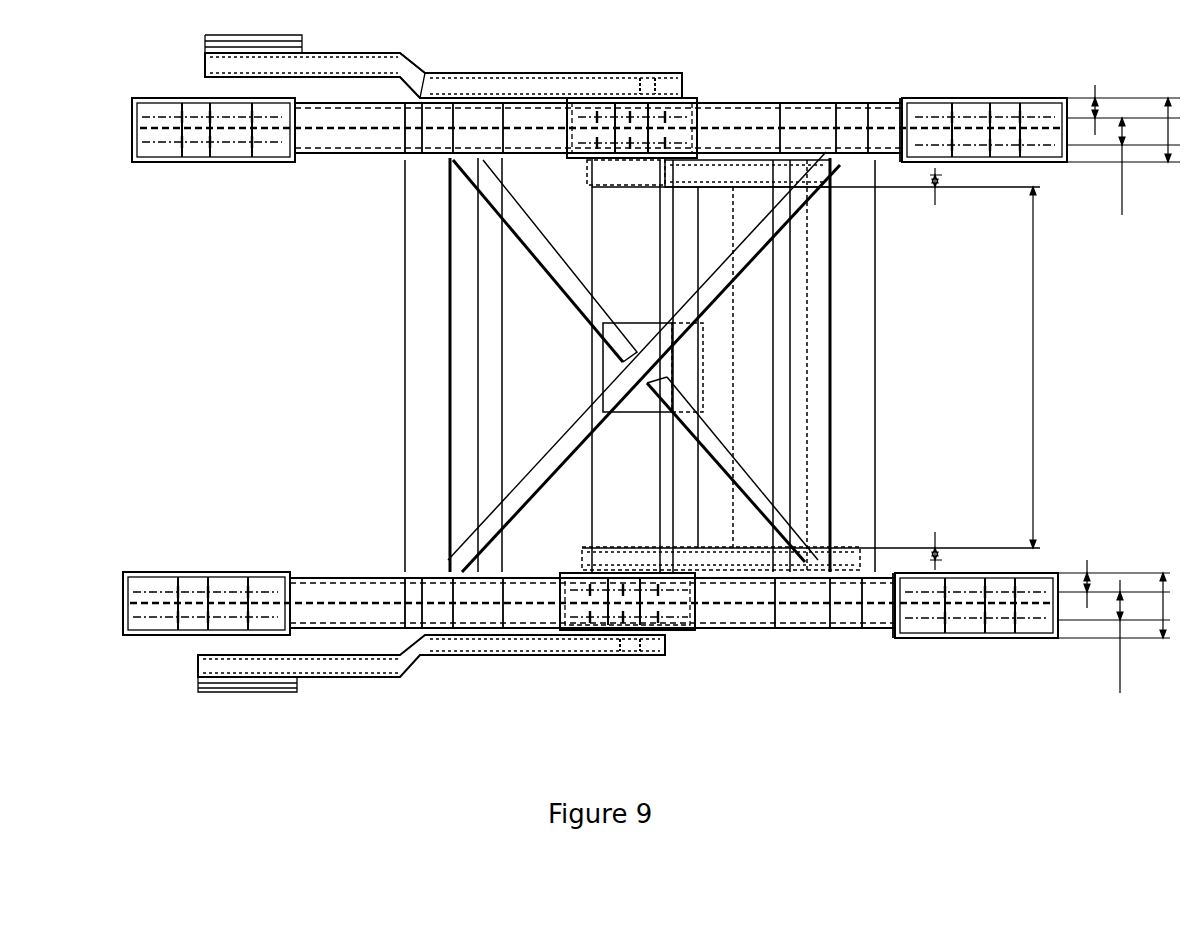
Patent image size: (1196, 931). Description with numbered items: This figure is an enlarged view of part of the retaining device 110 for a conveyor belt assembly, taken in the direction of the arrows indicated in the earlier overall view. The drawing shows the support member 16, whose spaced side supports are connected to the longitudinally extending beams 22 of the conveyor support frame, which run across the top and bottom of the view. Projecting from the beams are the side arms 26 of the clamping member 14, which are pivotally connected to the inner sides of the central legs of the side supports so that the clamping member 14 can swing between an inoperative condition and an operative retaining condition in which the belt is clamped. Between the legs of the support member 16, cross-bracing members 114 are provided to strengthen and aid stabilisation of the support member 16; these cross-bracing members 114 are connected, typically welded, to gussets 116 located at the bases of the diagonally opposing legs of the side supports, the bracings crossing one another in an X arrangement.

The clamping member 14 is at (870, 380).
The support member 16 is at (770, 91).
The longitudinally extending beams 22 is at (330, 160).
The side arms 26 is at (680, 75).
The retaining device 110 is at (384, 377).
The cross-bracing members 114 is at (392, 793).
The gussets 116 is at (462, 170).